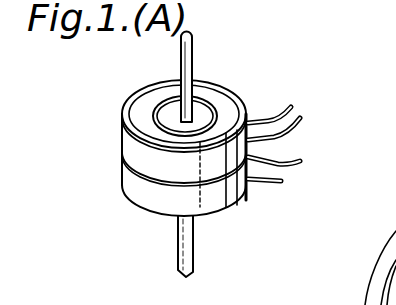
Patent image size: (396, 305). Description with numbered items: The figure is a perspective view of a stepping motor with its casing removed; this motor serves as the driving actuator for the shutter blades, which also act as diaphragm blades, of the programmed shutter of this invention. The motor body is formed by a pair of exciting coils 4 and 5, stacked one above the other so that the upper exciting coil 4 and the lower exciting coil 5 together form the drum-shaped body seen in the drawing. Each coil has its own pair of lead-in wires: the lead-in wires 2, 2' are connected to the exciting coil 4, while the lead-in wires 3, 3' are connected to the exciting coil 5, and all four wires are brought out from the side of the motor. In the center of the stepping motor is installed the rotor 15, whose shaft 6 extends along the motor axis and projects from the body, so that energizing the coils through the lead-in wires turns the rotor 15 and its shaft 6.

The lead-in wire 2 is at (269, 91).
The lead-in wire 2' is at (292, 114).
The lead-in wire 3 is at (284, 146).
The lead-in wire 3' is at (267, 204).
The exciting coil 4 is at (123, 147).
The exciting coil 5 is at (126, 184).
The shaft 6 is at (180, 232).
The rotor 15 is at (170, 110).